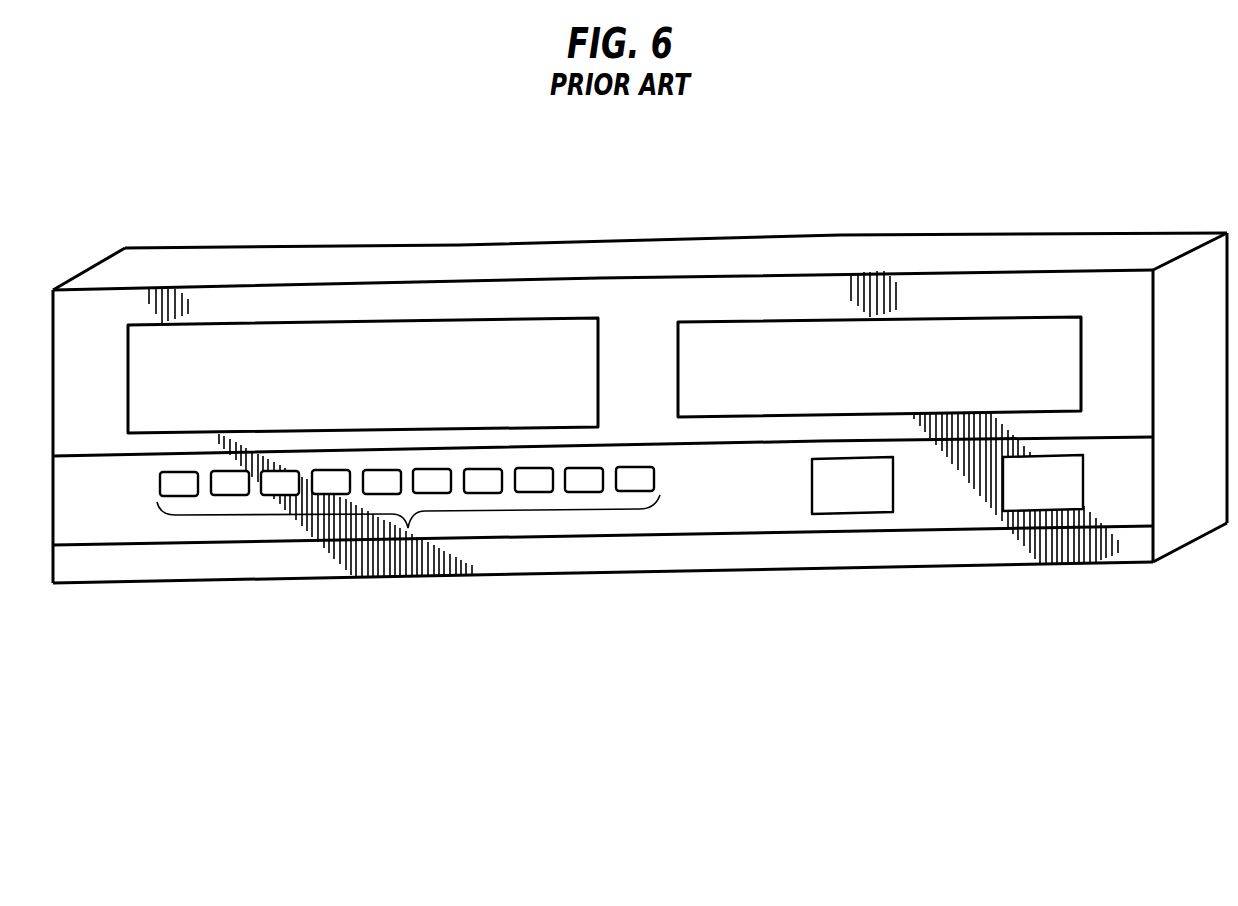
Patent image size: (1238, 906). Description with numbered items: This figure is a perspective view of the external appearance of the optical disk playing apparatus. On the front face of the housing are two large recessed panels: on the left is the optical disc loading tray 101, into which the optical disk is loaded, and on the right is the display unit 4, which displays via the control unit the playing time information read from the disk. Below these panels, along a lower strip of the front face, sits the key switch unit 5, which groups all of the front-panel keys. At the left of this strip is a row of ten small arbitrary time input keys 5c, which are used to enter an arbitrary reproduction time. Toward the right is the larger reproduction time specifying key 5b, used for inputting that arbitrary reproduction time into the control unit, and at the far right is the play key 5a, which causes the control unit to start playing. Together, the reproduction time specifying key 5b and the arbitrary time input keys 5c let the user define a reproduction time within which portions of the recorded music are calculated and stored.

The optical disc loading tray 101 is at (392, 360).
The display unit 4 is at (813, 348).
The key switch unit 5 is at (642, 621).
The play key 5a is at (1052, 554).
The reproduction time specifying key 5b is at (837, 517).
The arbitrary time input key 5c is at (408, 530).